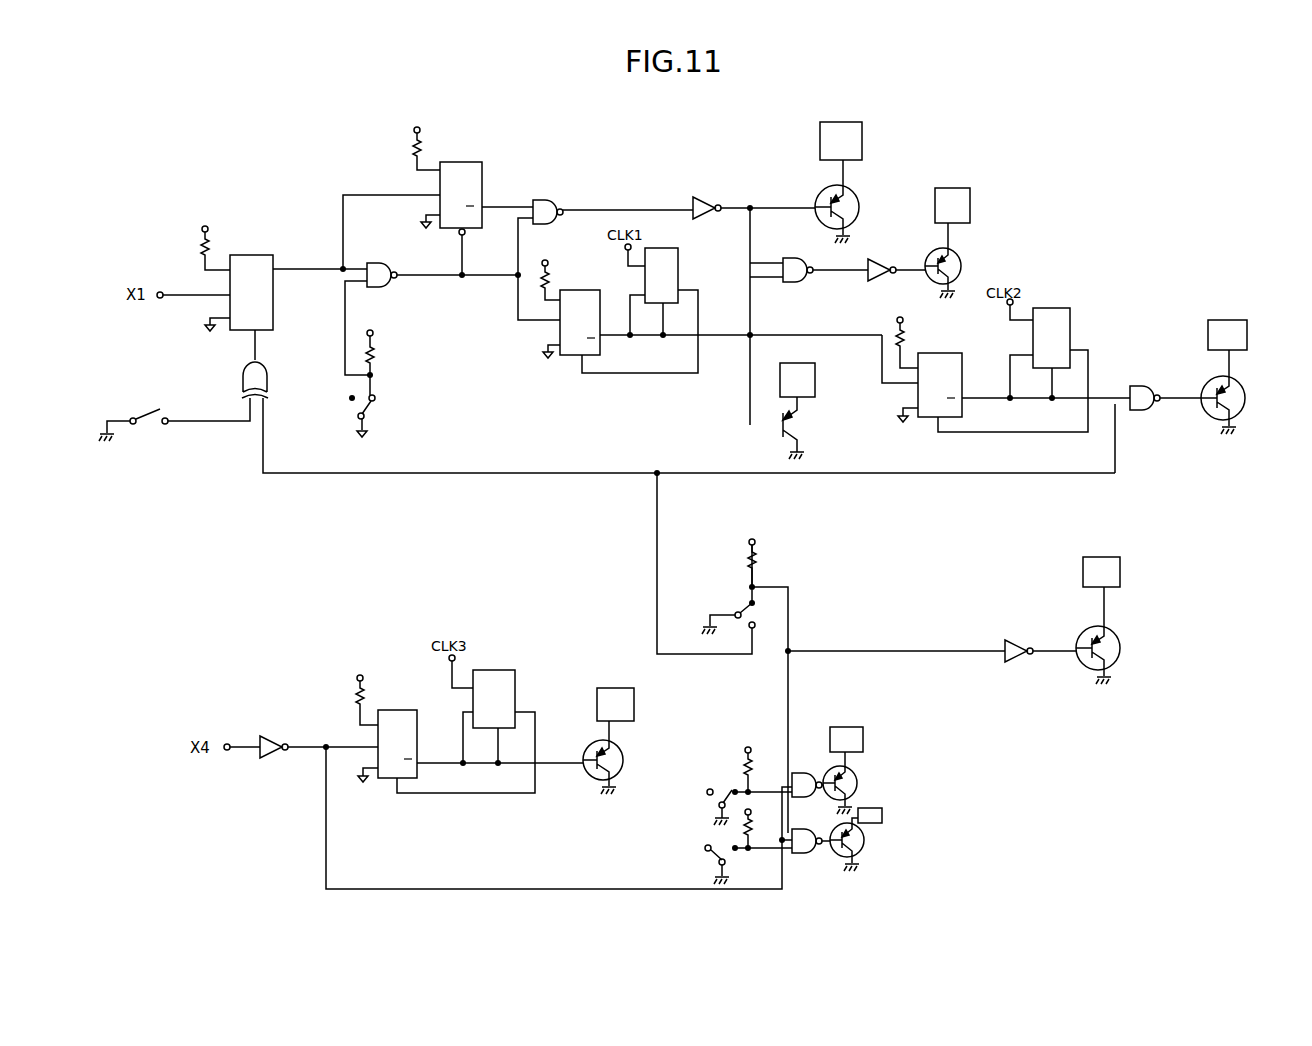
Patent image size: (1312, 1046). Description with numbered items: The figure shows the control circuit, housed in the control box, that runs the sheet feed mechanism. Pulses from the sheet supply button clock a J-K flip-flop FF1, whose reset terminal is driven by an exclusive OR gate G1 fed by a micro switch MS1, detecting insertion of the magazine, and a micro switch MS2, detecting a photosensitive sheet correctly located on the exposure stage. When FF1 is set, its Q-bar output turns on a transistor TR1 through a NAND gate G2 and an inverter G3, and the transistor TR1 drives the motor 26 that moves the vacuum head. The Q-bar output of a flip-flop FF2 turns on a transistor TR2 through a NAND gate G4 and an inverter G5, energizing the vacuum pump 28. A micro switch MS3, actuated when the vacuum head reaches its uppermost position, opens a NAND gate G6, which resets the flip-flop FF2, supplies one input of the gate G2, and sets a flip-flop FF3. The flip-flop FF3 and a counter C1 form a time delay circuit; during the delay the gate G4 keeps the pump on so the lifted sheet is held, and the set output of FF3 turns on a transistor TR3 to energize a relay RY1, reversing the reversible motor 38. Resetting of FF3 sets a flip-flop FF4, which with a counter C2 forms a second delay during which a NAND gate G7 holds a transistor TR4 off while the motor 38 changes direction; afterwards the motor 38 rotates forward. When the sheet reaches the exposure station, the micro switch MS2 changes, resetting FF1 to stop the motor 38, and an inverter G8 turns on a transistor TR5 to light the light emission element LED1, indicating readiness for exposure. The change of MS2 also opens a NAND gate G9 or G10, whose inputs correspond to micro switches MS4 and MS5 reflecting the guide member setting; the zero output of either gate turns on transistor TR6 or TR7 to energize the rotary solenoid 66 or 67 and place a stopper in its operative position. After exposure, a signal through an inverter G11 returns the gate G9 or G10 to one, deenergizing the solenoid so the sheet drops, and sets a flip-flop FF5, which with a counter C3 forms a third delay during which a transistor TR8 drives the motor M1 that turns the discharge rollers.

The J-K flip-flop FF1 is at (250, 262).
The flip-flop FF2 is at (471, 175).
The flip-flop FF3 is at (582, 296).
The flip-flop FF4 is at (940, 360).
The flip-flop FF5 is at (409, 742).
The exclusive OR gate G1 is at (270, 383).
The NAND gate G2 is at (552, 200).
The inverter G3 is at (708, 197).
The NAND gate G4 is at (800, 282).
The inverter G5 is at (883, 282).
The NAND gate G6 is at (393, 287).
The NAND gate G7 is at (1144, 386).
The inverter G8 is at (1017, 662).
The NAND gate G9 is at (809, 772).
The NAND gate G10 is at (811, 853).
The inverter G11 is at (268, 758).
The counter C1 is at (676, 278).
The counter C2 is at (1074, 331).
The counter C3 is at (517, 686).
The transistor TR1 is at (854, 214).
The transistor TR2 is at (959, 273).
The transistor TR3 is at (796, 428).
The transistor TR4 is at (1241, 405).
The transistor TR5 is at (1115, 655).
The transistor TR6 is at (856, 790).
The transistor TR7 is at (864, 847).
The transistor TR8 is at (621, 767).
The micro switch MS1 is at (149, 436).
The micro switch MS2 is at (734, 610).
The micro switch MS3 is at (374, 408).
The micro switch MS4 is at (705, 800).
The micro switch MS5 is at (700, 858).
The motor 26 is at (858, 133).
The vacuum pump 28 is at (953, 192).
The reversible motor 38 is at (1232, 330).
The relay RY1 is at (797, 380).
The motor M1 is at (634, 706).
The light emission element LED1 is at (1115, 567).
The rotary solenoid 66 is at (851, 727).
The solenoid 67 is at (882, 816).